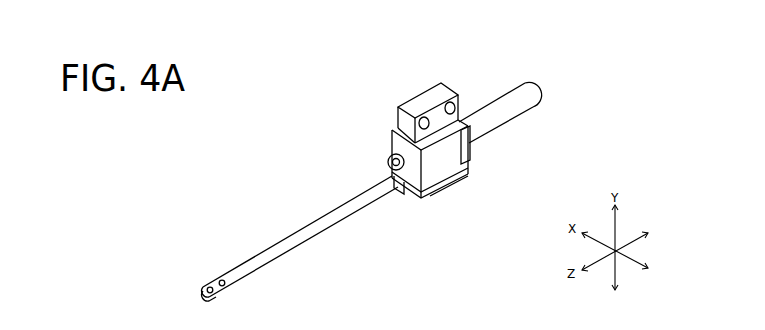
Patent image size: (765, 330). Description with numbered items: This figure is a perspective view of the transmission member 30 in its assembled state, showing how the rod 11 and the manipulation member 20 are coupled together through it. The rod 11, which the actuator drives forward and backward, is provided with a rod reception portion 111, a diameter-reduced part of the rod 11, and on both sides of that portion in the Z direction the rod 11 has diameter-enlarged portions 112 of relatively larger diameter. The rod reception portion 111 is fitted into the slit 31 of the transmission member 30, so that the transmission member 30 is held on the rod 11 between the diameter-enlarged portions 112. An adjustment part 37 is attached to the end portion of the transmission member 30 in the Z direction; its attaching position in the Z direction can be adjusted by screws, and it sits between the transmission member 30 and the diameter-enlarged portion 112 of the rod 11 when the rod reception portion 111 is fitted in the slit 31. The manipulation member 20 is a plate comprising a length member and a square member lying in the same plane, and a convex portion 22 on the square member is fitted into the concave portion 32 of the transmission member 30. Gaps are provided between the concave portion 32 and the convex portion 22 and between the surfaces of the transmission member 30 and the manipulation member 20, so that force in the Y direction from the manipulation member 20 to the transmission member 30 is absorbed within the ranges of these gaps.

The rod 11 is at (511, 118).
The manipulation member 20 is at (330, 224).
The convex portion 22 is at (434, 196).
The transmission member 30 is at (388, 146).
The slit 31 is at (388, 167).
The concave portion 32 is at (456, 178).
The adjustment part 37 is at (472, 147).
The rod reception portion 111 is at (418, 90).
The diameter-enlarged portion 112 is at (398, 190).